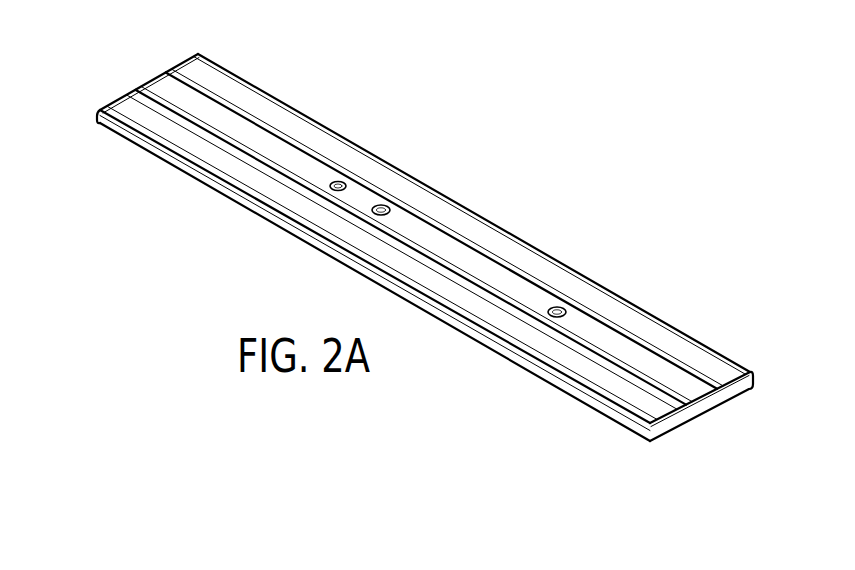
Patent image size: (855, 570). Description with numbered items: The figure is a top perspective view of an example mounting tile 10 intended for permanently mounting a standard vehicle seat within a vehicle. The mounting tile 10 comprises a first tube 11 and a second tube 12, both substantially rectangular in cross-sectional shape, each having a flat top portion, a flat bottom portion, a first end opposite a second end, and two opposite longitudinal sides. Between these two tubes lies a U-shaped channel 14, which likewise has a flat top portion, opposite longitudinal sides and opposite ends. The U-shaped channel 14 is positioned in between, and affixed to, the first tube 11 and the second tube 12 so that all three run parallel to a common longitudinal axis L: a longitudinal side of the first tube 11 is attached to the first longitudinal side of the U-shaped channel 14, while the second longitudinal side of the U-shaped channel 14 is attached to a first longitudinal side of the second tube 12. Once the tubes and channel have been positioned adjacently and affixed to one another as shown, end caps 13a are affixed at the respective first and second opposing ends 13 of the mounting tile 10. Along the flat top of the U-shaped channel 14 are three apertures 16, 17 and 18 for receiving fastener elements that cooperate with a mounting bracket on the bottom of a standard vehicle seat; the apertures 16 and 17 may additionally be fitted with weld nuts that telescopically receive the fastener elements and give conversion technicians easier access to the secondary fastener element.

The mounting tile 10 is at (442, 172).
The first tube 11 is at (250, 97).
The second tube 12 is at (137, 117).
The opposing ends 13 is at (210, 73).
The end caps 13a is at (152, 75).
The U-shaped channel 14 is at (175, 90).
The aperture 16 is at (556, 308).
The aperture 17 is at (372, 208).
The aperture 18 is at (330, 186).
The common longitudinal axis L is at (750, 302).